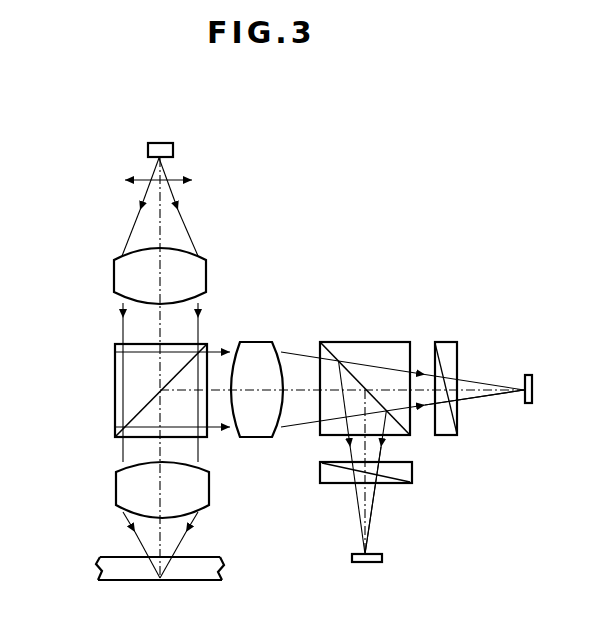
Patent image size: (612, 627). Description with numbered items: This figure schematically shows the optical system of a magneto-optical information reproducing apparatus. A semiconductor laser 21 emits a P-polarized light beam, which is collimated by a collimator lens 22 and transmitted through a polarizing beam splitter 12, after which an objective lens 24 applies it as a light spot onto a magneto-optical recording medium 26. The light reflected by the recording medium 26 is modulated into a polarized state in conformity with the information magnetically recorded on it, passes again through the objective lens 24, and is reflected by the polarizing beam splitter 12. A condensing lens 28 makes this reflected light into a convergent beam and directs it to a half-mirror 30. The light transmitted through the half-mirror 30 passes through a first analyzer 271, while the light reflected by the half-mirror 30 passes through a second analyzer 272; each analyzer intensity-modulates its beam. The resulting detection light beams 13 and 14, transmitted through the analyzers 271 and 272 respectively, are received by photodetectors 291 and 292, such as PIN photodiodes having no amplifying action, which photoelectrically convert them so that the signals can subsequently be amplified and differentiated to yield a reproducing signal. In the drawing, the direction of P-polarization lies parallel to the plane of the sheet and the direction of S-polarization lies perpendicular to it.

The semiconductor laser 21 is at (148, 147).
The collimator lens 22 is at (113, 262).
The polarizing beam splitter 12 is at (115, 372).
The objective lens 24 is at (116, 483).
The magneto-optical recording medium 26 is at (101, 566).
The condensing lens 28 is at (268, 341).
The half-mirror 30 is at (401, 341).
The analyzer 271 is at (458, 348).
The analyzer 272 is at (413, 470).
The photodetector 291 is at (533, 380).
The photodetector 292 is at (383, 558).
The light beam 13 is at (483, 397).
The light beam 14 is at (374, 498).